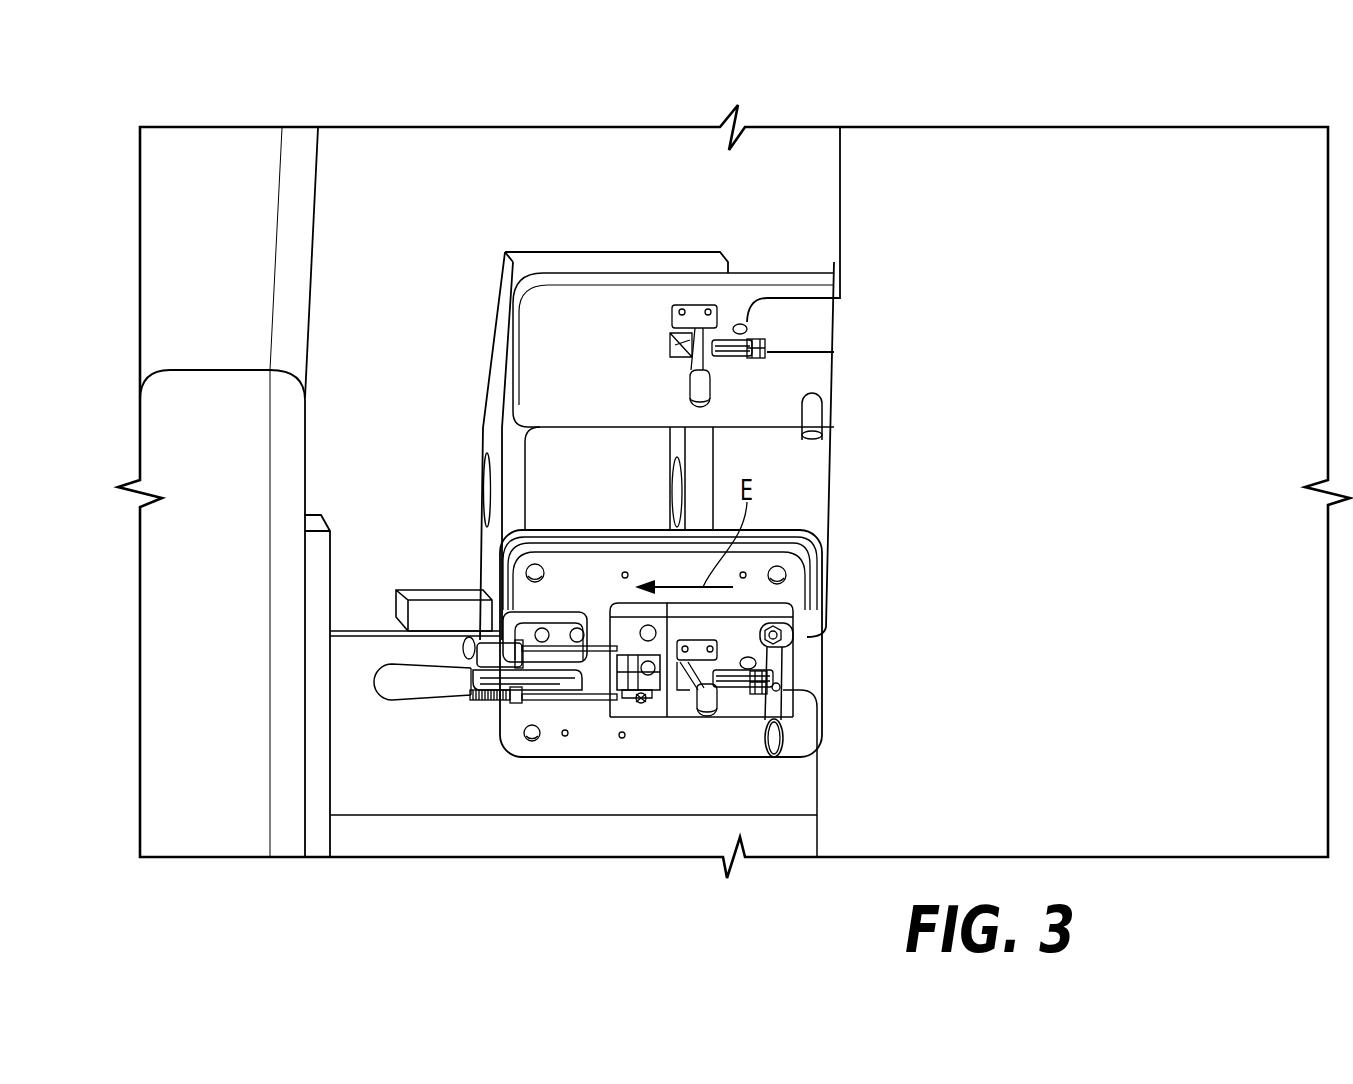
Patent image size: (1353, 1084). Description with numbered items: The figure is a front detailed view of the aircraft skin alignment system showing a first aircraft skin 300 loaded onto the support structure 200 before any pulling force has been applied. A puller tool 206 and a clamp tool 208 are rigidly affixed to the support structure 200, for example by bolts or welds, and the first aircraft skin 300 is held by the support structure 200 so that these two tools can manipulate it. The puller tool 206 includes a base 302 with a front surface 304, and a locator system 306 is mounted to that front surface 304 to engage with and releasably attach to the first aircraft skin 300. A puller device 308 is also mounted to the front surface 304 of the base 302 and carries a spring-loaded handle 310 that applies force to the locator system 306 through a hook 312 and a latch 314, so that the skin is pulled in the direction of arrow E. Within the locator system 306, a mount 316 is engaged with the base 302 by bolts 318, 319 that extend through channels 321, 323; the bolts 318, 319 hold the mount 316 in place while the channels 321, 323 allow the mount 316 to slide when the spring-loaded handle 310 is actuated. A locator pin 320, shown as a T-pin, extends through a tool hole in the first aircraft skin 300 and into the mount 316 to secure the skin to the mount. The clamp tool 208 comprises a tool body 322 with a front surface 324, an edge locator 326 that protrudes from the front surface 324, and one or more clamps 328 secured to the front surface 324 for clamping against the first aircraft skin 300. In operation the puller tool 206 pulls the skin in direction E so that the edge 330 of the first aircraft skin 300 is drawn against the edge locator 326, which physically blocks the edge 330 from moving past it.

The support structure 200 is at (152, 340).
The puller tool 206 is at (465, 552).
The clamp tool 208 is at (468, 336).
The first aircraft skin 300 is at (1160, 158).
The base 302 is at (540, 757).
The front surface 304 is at (703, 752).
The locator system 306 is at (755, 745).
The puller device 308 is at (480, 722).
The spring-loaded handle 310 is at (365, 679).
The hook 312 is at (630, 653).
The latch 314 is at (598, 697).
The mount 316 is at (745, 613).
The bolt 318 is at (785, 637).
The bolt 319 is at (637, 695).
The locator pin 320 is at (783, 703).
The channel 321 is at (803, 618).
The tool body 322 is at (590, 283).
The channel 323 is at (648, 708).
The front surface 324 is at (648, 304).
The edge locator 326 is at (821, 420).
The clamp 328 is at (670, 347).
The edge 330 is at (838, 203).